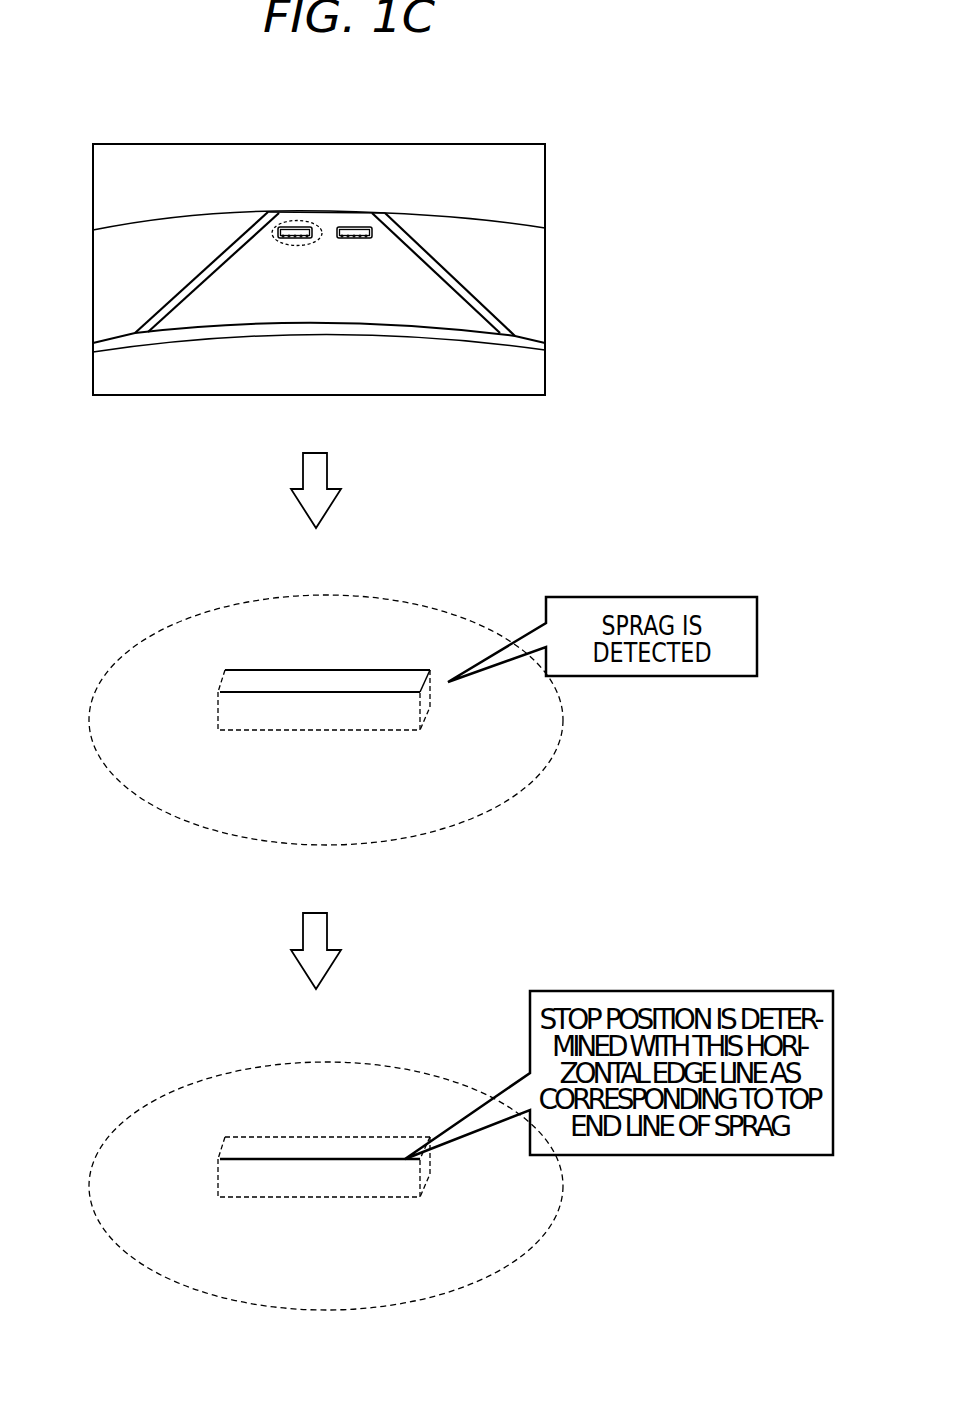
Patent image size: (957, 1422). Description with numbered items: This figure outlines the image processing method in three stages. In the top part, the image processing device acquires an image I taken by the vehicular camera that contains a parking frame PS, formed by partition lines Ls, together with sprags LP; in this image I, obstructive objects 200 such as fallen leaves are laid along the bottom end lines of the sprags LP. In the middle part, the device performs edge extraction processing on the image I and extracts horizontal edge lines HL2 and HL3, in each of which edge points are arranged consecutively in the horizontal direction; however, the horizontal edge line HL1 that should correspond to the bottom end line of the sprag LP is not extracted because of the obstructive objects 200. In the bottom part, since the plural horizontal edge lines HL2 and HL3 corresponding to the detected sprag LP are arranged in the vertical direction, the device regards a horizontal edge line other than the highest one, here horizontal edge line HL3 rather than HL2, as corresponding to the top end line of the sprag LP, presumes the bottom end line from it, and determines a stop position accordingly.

The image I is at (505, 145).
The sprag LP is at (292, 227).
The obstructive objects 200 is at (307, 220).
The partition lines Ls is at (443, 272).
The parking frame PS is at (440, 305).
The horizontal edge line HL1 is at (380, 732).
The horizontal edge line HL2 is at (282, 670).
The horizontal edge line HL3 is at (340, 692).